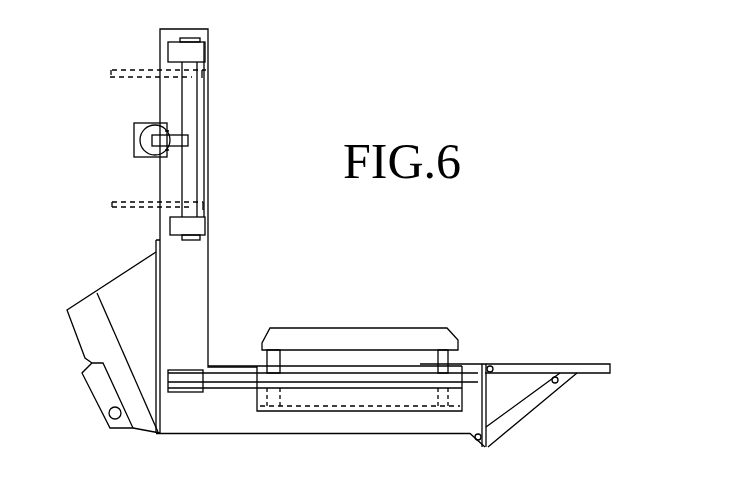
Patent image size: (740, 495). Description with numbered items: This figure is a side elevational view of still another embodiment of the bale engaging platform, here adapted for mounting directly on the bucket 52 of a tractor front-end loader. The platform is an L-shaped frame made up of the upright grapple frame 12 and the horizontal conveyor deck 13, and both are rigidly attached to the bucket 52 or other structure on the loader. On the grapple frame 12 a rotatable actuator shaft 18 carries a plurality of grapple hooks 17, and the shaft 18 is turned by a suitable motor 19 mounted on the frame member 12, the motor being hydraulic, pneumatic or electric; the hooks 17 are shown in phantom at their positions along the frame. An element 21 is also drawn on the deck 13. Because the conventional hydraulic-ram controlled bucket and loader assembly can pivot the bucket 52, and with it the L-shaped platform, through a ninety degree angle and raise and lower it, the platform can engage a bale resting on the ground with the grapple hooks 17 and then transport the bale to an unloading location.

The grapple frame 12 is at (200, 289).
The conveyor deck 13 is at (384, 425).
The grapple hooks 17 is at (125, 69).
The actuator shaft 18 is at (195, 168).
The motor 19 is at (134, 131).
The table / platform 21 is at (372, 321).
The bucket 52 is at (121, 306).